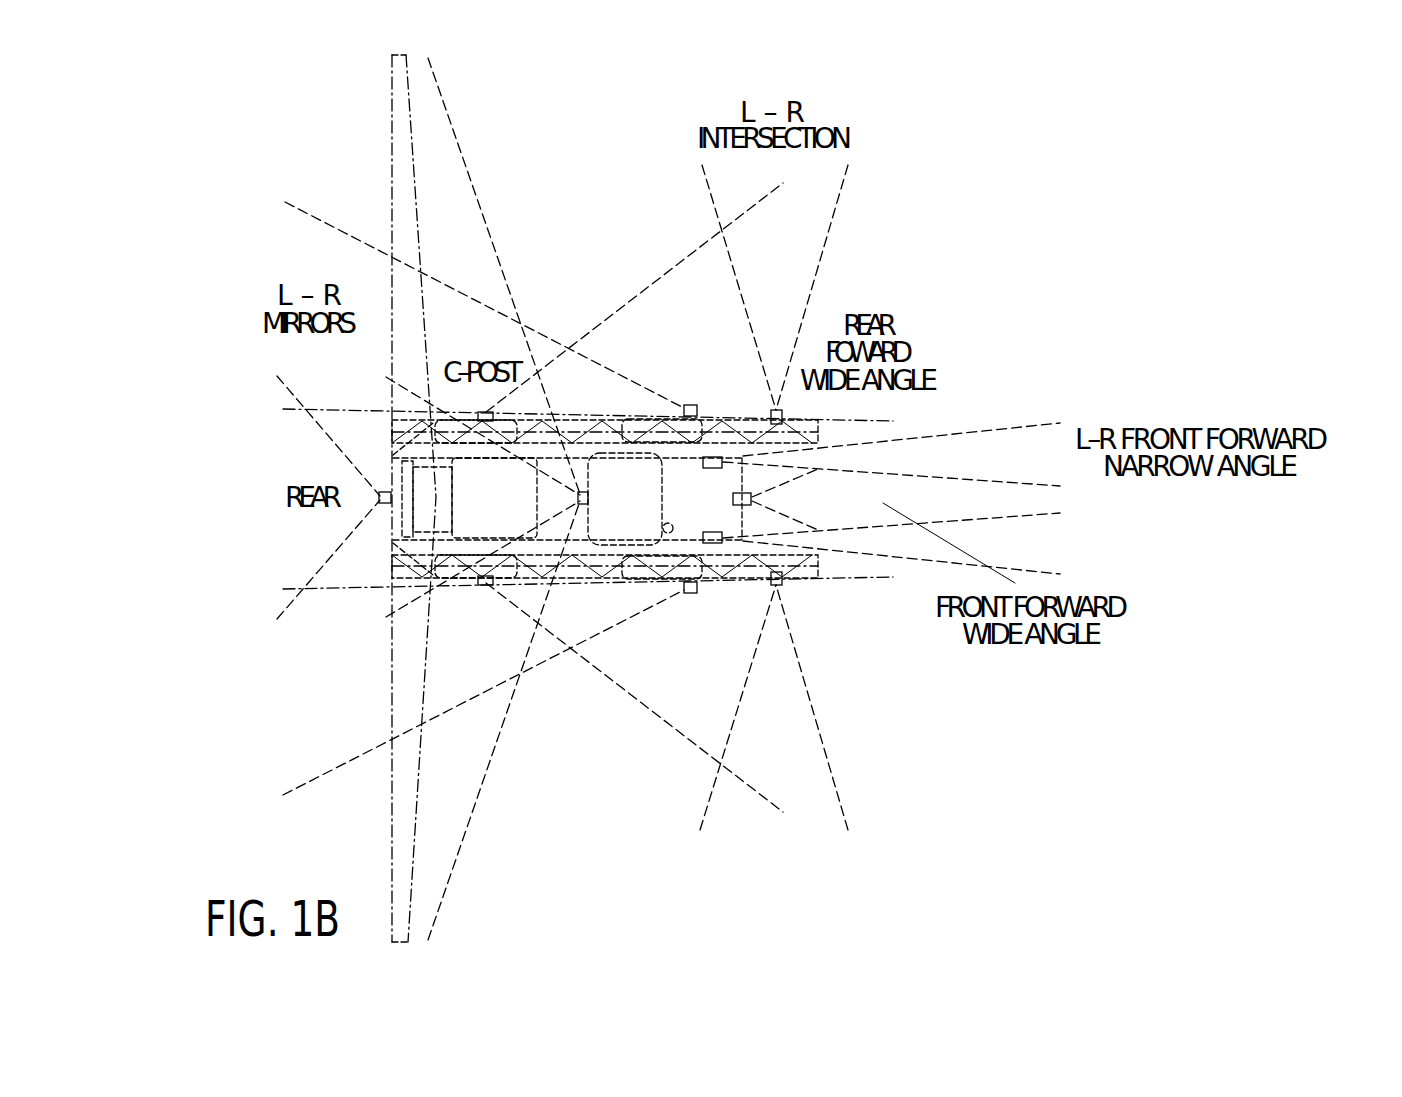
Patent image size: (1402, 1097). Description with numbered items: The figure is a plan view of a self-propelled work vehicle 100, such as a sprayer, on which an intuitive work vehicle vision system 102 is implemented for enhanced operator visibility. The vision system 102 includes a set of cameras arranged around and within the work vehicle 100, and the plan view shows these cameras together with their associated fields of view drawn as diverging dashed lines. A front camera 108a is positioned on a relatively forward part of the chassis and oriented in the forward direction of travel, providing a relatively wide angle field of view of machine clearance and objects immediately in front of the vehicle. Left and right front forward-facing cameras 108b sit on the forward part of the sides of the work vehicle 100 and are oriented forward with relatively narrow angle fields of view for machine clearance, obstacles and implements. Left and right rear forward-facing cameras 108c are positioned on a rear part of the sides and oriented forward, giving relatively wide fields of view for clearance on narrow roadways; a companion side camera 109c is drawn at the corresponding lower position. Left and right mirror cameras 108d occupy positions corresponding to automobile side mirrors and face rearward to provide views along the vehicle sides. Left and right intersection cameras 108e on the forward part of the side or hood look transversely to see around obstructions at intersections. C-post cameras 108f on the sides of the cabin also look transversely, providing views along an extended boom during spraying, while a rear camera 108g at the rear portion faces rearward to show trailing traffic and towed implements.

The self-propelled work vehicle 100 is at (778, 480).
The work vehicle vision system 102 is at (360, 211).
The front camera 108a is at (752, 500).
The left and right front forward-facing cameras 108b is at (712, 468).
The left and right rear forward-facing cameras 108c is at (481, 412).
The left and right mirror cameras 108d is at (690, 405).
The left and right intersection cameras 108e is at (771, 413).
The C-post cameras 108f is at (578, 497).
The rear camera 108g is at (380, 505).
The right mirror camera 109c is at (485, 586).